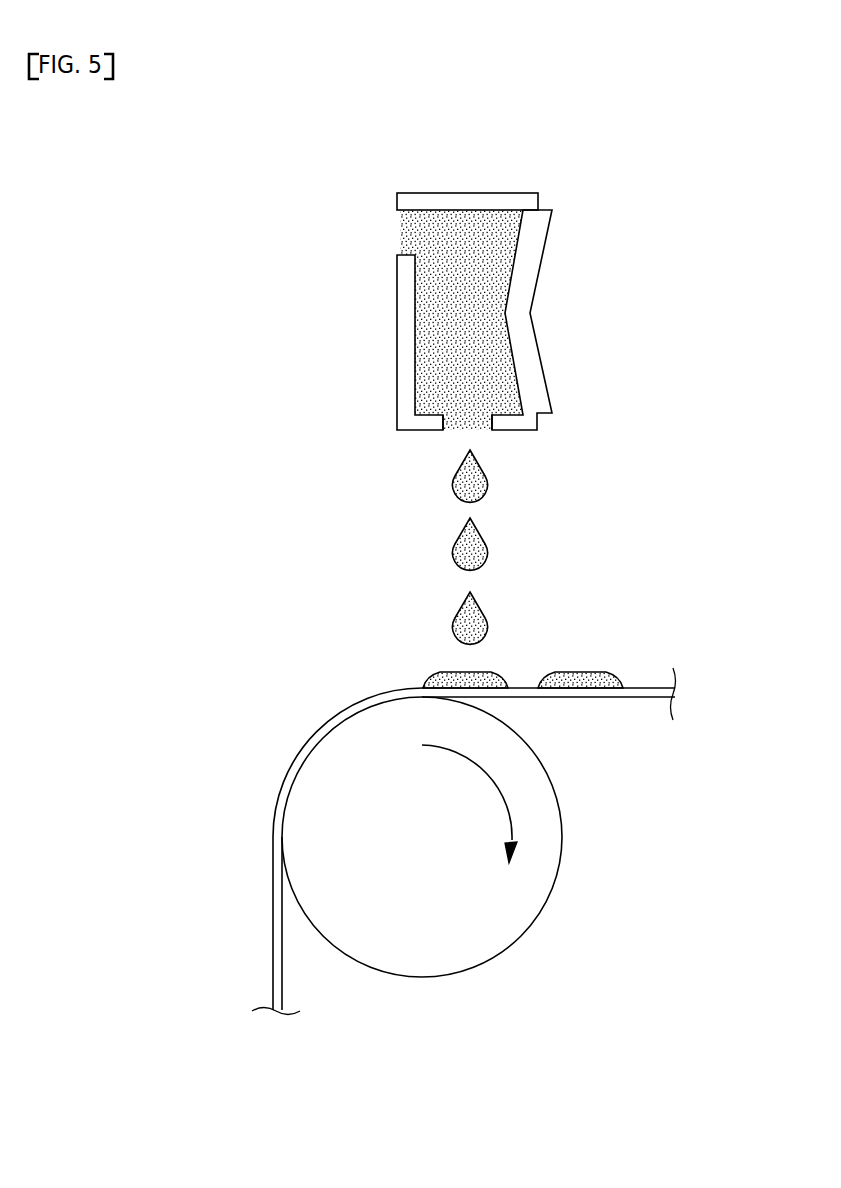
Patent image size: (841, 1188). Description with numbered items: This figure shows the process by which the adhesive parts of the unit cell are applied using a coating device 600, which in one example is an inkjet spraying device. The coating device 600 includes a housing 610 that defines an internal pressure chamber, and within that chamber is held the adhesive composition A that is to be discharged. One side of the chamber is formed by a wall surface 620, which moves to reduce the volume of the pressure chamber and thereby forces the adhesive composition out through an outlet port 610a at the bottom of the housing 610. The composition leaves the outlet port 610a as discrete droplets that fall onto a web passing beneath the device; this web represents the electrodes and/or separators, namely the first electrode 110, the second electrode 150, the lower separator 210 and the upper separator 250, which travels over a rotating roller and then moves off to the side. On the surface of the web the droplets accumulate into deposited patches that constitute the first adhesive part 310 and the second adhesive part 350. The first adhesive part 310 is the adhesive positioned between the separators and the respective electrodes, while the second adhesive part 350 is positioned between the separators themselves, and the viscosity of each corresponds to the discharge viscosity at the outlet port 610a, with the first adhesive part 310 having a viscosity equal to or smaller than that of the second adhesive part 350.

The coating device 600 is at (483, 304).
The housing 610 is at (428, 201).
The outlet port 610a is at (465, 425).
The wall surface 620 is at (527, 353).
The active material slurry A is at (405, 232).
The first adhesive part 310 is at (523, 648).
The second adhesive part 350 is at (578, 680).
The first electrode 110 is at (496, 841).
The second electrode 150 is at (464, 841).
The lower separator 210 is at (464, 841).
The upper separator 250 is at (607, 700).